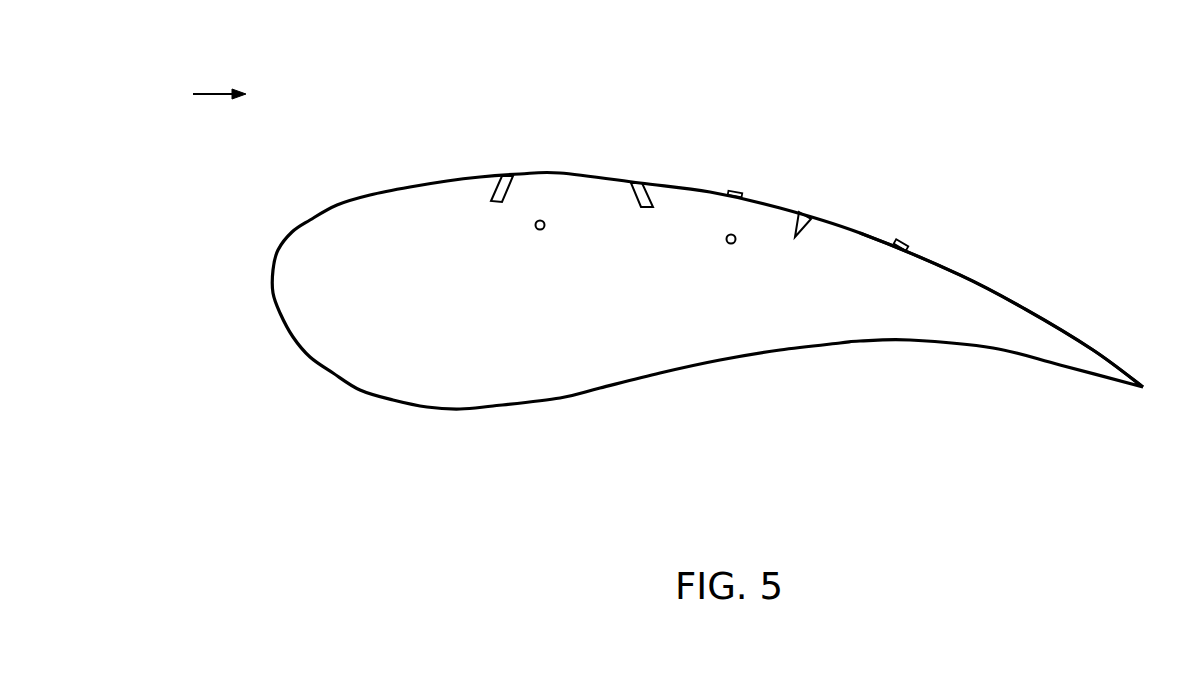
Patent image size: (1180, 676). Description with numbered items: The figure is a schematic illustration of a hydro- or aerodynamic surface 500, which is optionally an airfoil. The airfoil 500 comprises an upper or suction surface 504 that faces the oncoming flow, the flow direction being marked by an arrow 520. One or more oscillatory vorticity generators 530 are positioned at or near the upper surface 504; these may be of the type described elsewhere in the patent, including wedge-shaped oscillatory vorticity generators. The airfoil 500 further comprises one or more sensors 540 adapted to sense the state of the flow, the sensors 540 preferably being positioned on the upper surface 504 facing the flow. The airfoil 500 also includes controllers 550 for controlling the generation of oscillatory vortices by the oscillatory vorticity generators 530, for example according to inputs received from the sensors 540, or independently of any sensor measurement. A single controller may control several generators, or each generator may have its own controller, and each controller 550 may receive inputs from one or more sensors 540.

The hydro- or aerodynamic surface 500 is at (1036, 178).
The upper surface 504 is at (1025, 308).
The arrow 520 is at (212, 92).
The oscillatory vorticity generators 530 is at (638, 182).
The sensors 540 is at (903, 240).
The controllers 550 is at (535, 225).